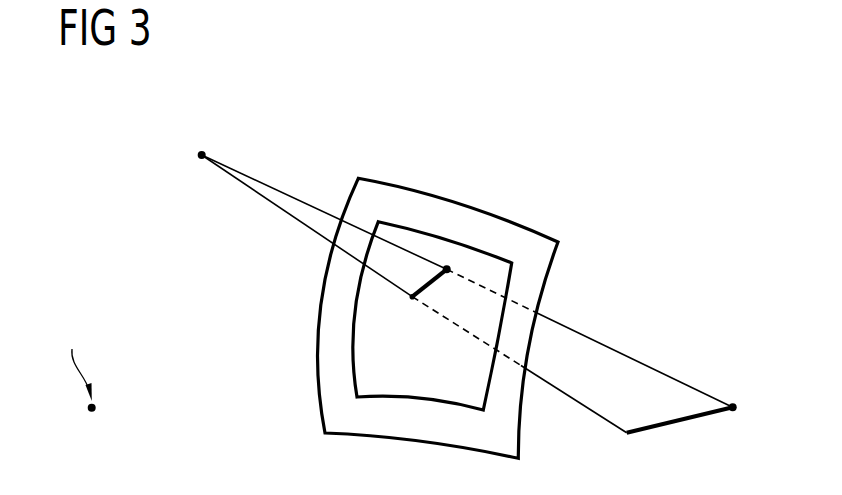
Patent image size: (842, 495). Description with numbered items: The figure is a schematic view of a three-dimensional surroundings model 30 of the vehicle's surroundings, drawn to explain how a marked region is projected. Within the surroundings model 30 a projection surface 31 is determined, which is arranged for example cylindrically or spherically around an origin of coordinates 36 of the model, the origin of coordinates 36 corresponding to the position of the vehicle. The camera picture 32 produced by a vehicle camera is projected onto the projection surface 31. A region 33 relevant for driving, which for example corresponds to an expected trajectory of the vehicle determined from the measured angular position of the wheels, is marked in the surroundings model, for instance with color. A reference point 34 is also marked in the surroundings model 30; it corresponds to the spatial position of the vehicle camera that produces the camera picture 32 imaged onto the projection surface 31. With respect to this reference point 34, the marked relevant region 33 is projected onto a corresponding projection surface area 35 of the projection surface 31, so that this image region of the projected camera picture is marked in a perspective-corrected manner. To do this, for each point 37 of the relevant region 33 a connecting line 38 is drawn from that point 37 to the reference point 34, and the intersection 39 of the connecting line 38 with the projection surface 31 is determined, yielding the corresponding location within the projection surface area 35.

The three-dimensional surroundings model 30 is at (658, 158).
The projection surface 31 is at (517, 222).
The camera picture 32 is at (355, 357).
The region relevant for driving 33 is at (692, 421).
The reference point 34 is at (202, 152).
The projection surface area 35 is at (413, 290).
The origin of coordinates 36 is at (77, 364).
The point 37 is at (733, 404).
The connecting line 38 is at (625, 353).
The intersection 39 is at (447, 266).